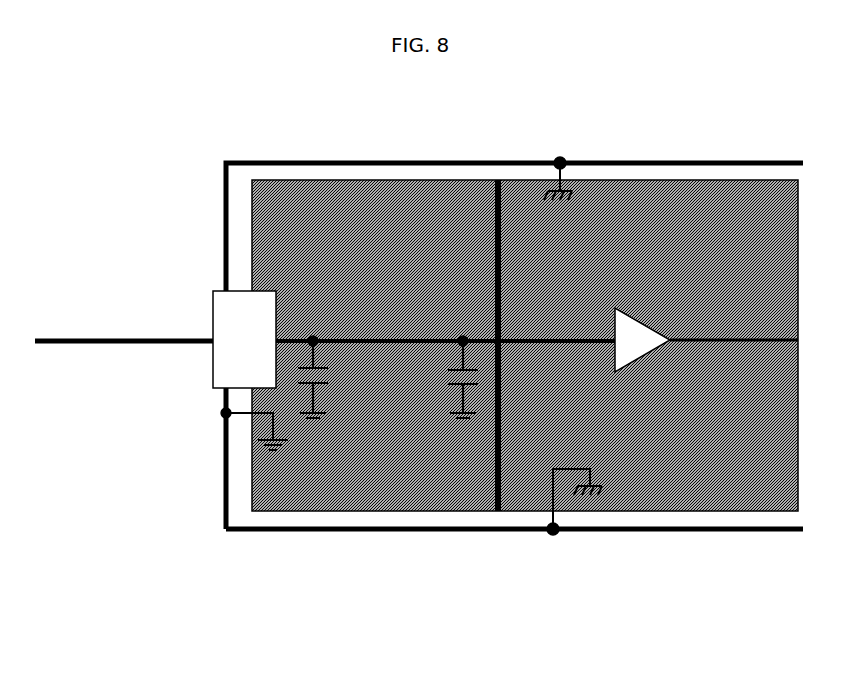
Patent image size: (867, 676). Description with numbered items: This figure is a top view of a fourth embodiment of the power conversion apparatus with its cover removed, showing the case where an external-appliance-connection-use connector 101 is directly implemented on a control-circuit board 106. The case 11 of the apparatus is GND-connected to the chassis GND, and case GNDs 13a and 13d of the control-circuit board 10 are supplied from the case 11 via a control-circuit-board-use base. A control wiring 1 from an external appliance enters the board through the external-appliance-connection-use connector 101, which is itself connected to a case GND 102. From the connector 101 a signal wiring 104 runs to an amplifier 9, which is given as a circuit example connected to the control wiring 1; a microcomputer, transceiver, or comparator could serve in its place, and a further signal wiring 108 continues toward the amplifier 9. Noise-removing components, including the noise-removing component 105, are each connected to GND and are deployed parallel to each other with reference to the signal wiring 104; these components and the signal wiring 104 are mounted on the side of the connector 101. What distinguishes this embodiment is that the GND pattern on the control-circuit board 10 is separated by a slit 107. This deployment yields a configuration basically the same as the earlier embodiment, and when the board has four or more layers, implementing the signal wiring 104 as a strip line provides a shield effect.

The control wiring 1 is at (65, 338).
The amplifier 9 is at (640, 315).
The control-circuit board 10 is at (708, 172).
The case 11 is at (632, 525).
The case GND 13a is at (572, 155).
The case GND 13d is at (560, 525).
The external-appliance-connection-use connector 101 is at (220, 320).
The case GND 102 is at (212, 410).
The signal wiring 104 is at (355, 325).
The noise-removing component 105 is at (445, 395).
The control-circuit board 106 is at (318, 215).
The slit 107 is at (445, 290).
The signal wiring 108 is at (525, 318).